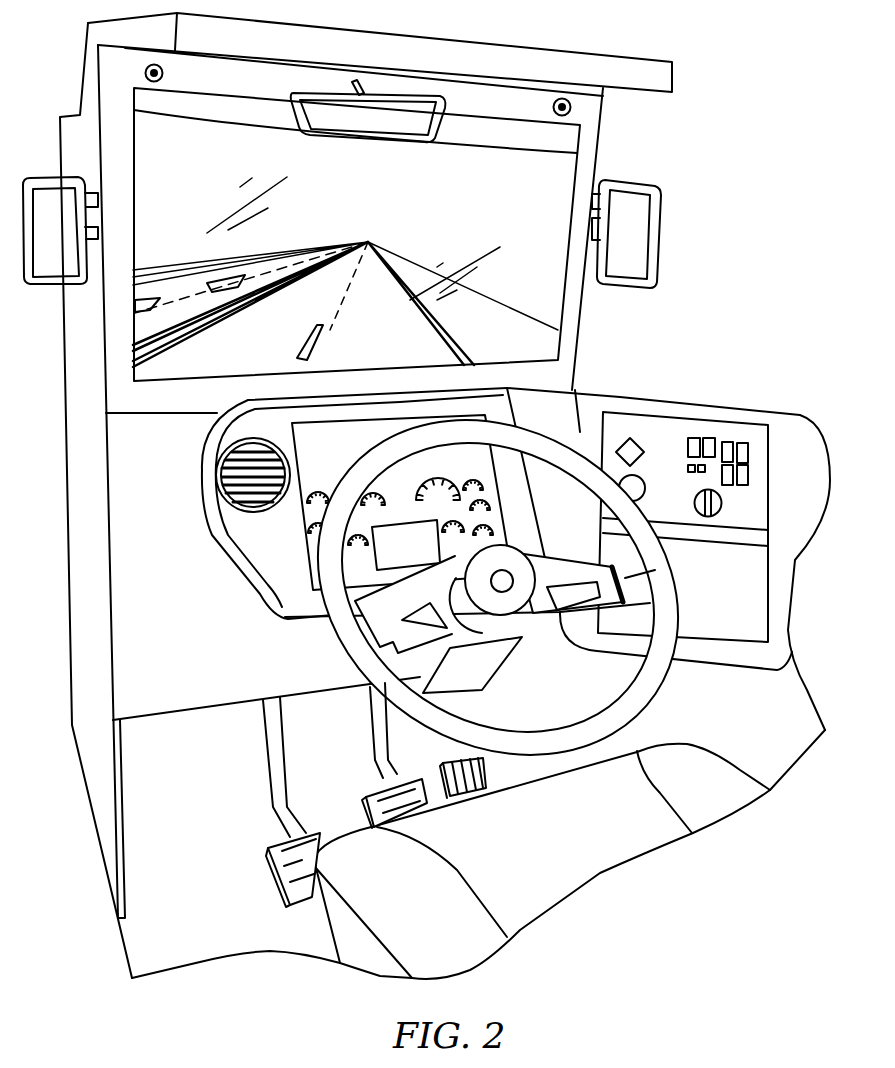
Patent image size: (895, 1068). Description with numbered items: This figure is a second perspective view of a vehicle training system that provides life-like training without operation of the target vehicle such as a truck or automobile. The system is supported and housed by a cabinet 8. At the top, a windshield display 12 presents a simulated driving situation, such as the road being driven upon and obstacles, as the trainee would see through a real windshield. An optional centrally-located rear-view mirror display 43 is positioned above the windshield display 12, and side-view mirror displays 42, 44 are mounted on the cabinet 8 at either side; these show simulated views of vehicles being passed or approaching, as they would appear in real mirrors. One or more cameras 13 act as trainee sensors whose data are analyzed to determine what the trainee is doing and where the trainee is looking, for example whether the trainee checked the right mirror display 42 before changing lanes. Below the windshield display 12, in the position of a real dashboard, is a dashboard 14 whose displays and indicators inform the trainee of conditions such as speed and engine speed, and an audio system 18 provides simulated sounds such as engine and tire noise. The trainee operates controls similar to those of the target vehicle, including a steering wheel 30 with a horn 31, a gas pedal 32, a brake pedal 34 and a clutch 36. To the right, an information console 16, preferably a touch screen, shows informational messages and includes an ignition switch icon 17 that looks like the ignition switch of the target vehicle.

The cabinet 8 is at (563, 63).
The windshield display 12 is at (550, 180).
The camera 13 is at (158, 74).
The dashboard 14 is at (336, 461).
The information console 16 is at (679, 487).
The ignition switch icon 17 is at (720, 503).
The audio system 18 is at (227, 487).
The steering wheel 30 is at (548, 451).
The horn 31 is at (500, 600).
The gas pedal 32 is at (490, 775).
The brake pedal 34 is at (403, 798).
The clutch 36 is at (297, 875).
The side-view mirror display 42 is at (633, 230).
The rear-view mirror display 43 is at (410, 124).
The side-view mirror display 44 is at (60, 212).